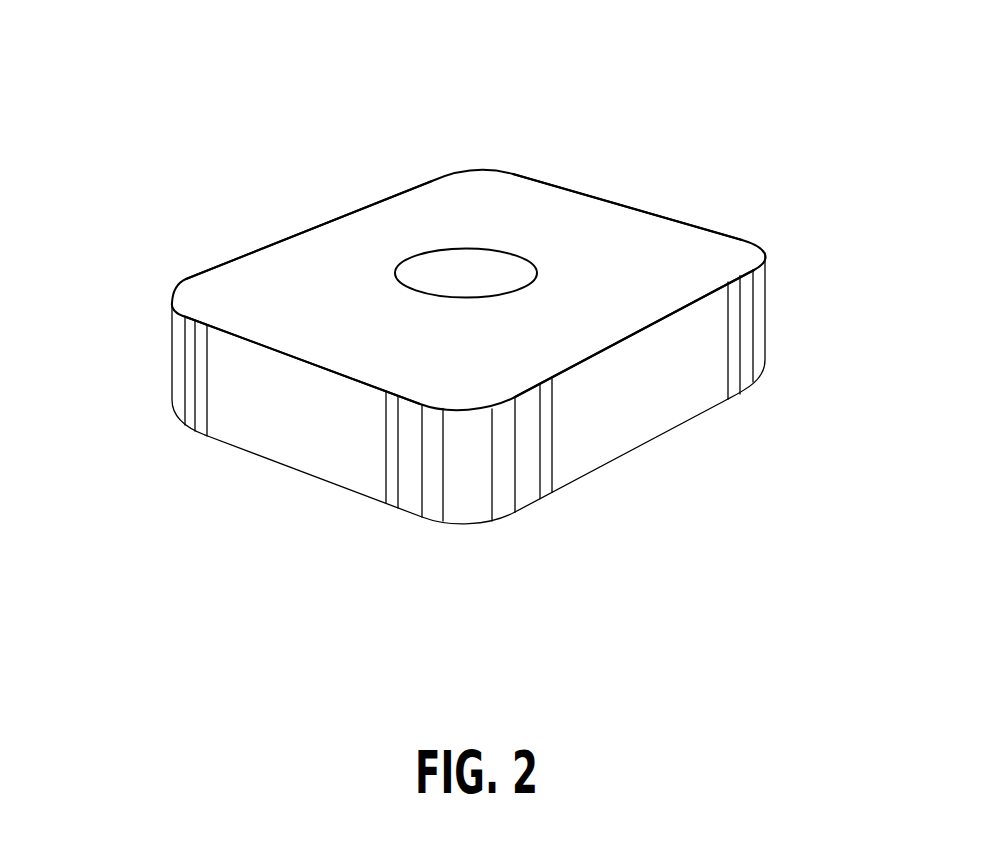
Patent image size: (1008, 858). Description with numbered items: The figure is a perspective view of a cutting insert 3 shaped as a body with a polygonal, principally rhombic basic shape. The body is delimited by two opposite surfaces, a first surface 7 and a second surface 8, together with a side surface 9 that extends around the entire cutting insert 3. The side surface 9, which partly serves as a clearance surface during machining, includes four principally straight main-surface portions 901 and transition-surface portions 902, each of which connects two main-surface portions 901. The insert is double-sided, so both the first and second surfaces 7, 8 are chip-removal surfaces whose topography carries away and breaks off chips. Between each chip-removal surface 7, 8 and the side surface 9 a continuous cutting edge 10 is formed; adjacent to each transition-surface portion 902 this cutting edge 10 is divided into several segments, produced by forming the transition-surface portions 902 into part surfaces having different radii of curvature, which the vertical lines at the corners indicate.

The cutting insert 3 is at (182, 178).
The first surface 7 is at (573, 205).
The second surface 8 is at (325, 492).
The side surface 9 is at (707, 378).
The cutting edge 10 is at (623, 340).
The main-surface portion 901 is at (335, 202).
The transition-surface portion 902 is at (490, 153).